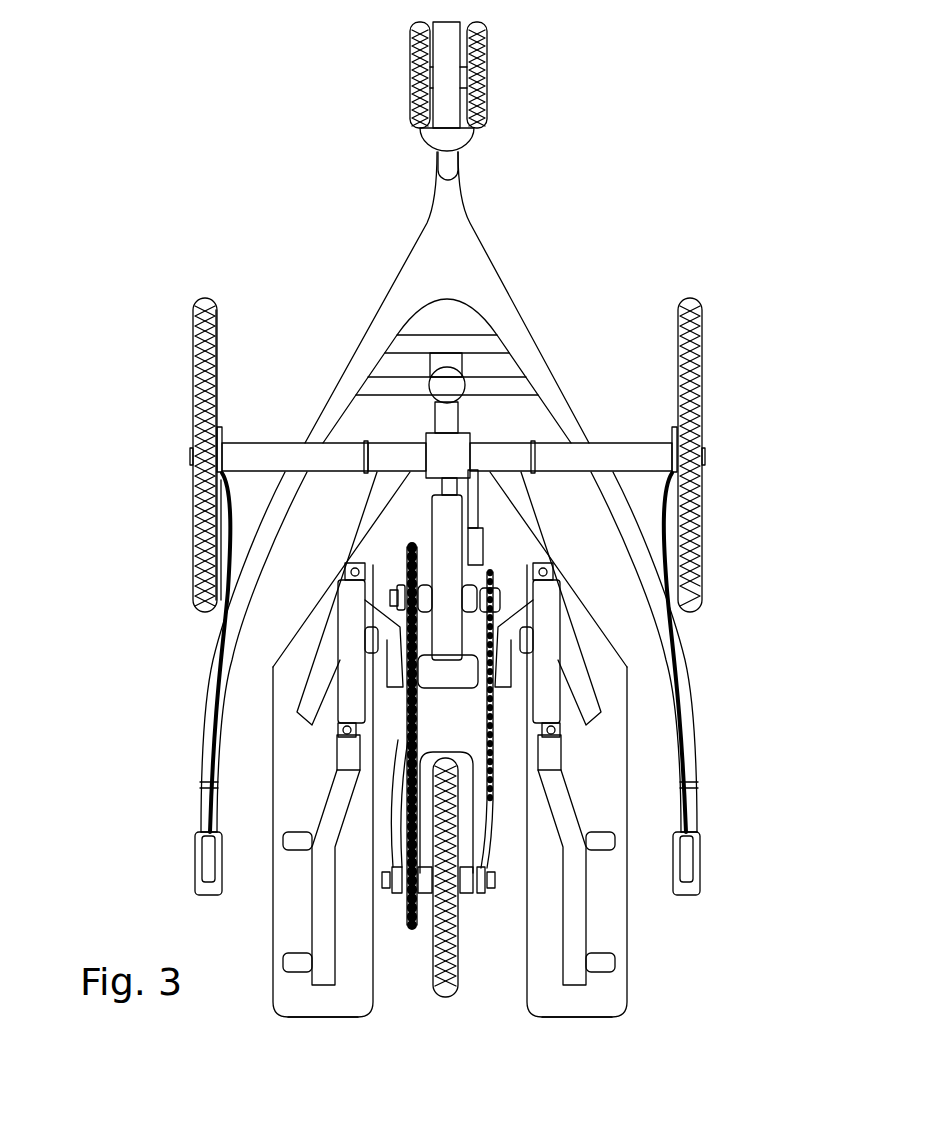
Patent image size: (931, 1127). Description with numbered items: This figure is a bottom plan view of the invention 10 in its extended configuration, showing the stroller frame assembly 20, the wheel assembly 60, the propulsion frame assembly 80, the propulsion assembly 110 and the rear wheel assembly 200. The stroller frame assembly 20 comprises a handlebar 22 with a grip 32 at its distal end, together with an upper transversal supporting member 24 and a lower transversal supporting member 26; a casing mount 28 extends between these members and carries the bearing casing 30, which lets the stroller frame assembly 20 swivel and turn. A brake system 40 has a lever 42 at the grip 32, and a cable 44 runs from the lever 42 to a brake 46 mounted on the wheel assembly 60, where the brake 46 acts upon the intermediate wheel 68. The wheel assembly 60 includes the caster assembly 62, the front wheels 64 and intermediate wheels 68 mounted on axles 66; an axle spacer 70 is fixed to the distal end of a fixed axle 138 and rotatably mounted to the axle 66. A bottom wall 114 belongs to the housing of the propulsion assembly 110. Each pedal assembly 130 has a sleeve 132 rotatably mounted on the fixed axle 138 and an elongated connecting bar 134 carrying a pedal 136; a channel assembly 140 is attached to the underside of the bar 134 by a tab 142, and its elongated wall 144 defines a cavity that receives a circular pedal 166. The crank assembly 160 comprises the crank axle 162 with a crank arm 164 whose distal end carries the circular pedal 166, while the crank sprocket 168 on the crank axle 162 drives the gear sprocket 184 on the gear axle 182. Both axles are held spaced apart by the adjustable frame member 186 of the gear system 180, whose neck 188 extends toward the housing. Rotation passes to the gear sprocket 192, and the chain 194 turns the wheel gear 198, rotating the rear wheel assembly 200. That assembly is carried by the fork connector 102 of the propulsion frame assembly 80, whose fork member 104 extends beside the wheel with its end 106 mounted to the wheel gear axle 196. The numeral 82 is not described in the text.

The instant invention 10 is at (694, 120).
The stroller frame assembly 20 is at (422, 232).
The handlebar 22 is at (200, 822).
The upper transversal supporting member 24 is at (423, 338).
The lower transversal supporting member 26 is at (537, 335).
The casing mount 28 is at (427, 362).
The bearing casing 30 is at (460, 372).
The grip 32 is at (195, 868).
The brake system 40 is at (688, 882).
The lever 42 is at (208, 858).
The cable 44 is at (230, 505).
The brake 46 is at (226, 420).
The wheel assembly 60 is at (410, 48).
The caster assembly 62 is at (447, 138).
The front wheels 64 is at (430, 67).
The axle 66 is at (190, 457).
The intermediate wheel 68 is at (197, 318).
The axle spacer 70 is at (270, 447).
The propulsion frame assembly 80 is at (485, 520).
The housing 82 is at (440, 418).
The fork connector 102 is at (215, 738).
The fork member 104 is at (400, 803).
The end 106 is at (393, 895).
The propulsion assembly 110 is at (478, 436).
The bottom wall 114 is at (435, 467).
The pedal assembly 130 is at (273, 779).
The sleeve 132 is at (397, 452).
The elongated connecting bar 134 is at (345, 532).
The pedal 136 is at (273, 990).
The fixed axle 138 is at (380, 467).
The channel assembly 140 is at (217, 582).
The tab 142 is at (340, 728).
The elongated wall 144 is at (345, 678).
The crank assembly 160 is at (560, 562).
The crank axle 162 is at (585, 625).
The crank arm 164 is at (333, 602).
The circular pedal 166 is at (352, 662).
The crank sprocket 168 is at (565, 745).
The gear system 180 is at (226, 580).
The gear axle 182 is at (563, 607).
The gear sprocket 184 is at (500, 573).
The adjustable frame member 186 is at (215, 523).
The neck 188 is at (433, 505).
The gear sprocket 192 is at (402, 578).
The chain 194 is at (418, 695).
The wheel gear axle 196 is at (462, 858).
The wheel gear 198 is at (408, 920).
The wheel assembly 200 is at (456, 974).